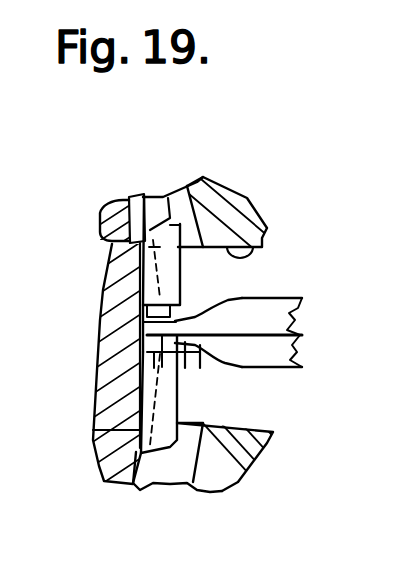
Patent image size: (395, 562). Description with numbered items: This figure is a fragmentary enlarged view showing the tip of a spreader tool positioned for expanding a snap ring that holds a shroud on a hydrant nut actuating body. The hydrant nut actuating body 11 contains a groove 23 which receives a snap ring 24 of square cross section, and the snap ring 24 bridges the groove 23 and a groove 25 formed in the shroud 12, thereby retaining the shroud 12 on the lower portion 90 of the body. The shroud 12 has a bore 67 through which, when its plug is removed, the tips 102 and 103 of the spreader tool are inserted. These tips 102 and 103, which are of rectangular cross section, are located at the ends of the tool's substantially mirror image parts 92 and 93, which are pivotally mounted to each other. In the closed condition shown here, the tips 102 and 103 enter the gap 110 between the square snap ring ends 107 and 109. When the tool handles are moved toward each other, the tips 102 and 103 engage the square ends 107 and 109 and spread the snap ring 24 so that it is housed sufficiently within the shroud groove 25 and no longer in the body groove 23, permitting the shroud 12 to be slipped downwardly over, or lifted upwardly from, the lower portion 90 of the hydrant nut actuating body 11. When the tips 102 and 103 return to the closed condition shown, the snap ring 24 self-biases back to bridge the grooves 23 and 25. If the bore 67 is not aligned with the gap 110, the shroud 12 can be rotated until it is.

The hydrant nut actuating body 11 is at (100, 283).
The shroud 12 is at (250, 198).
The groove 23 is at (130, 195).
The snap ring 24 is at (103, 245).
The groove 25 is at (169, 196).
The bore 67 is at (267, 247).
The lower portion 90 is at (140, 489).
The part 92 is at (303, 316).
The part 93 is at (303, 351).
The tip 102 is at (188, 306).
The tip 103 is at (192, 350).
The square end 107 is at (142, 322).
The square end 109 is at (143, 340).
The gap 110 is at (178, 400).